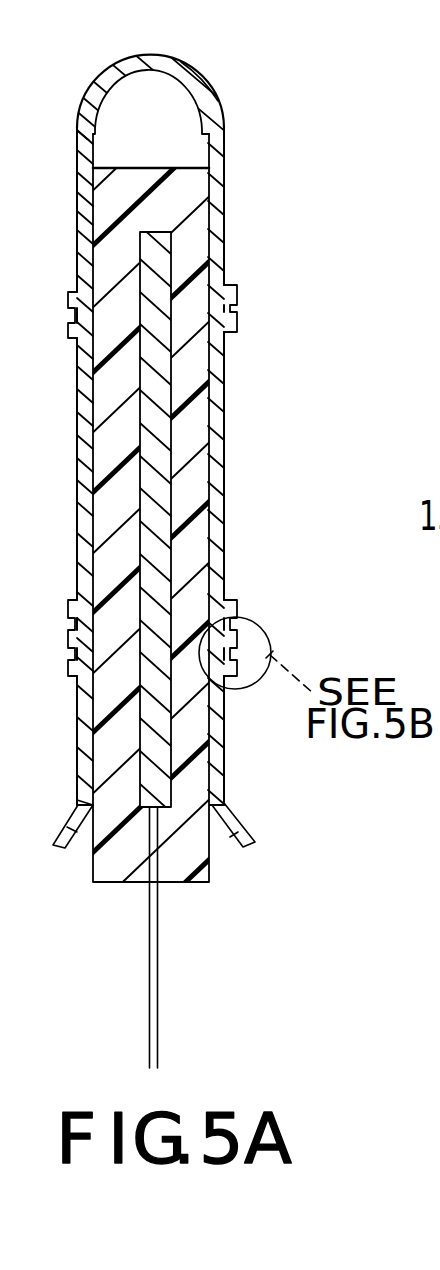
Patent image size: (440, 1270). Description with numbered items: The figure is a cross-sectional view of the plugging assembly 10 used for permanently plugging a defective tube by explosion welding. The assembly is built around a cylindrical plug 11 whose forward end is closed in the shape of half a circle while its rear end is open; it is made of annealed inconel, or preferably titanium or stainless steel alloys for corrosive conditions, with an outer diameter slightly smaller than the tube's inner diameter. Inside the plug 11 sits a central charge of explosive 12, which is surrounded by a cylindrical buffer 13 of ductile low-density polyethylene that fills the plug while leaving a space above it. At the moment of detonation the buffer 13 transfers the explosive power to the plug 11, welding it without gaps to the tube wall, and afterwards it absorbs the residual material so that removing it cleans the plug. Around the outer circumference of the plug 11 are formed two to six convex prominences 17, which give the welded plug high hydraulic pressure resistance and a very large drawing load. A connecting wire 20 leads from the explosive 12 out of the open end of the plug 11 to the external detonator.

The plugging assembly 10 is at (272, 276).
The plug 11 is at (223, 122).
The explosive 12 is at (153, 517).
The cylindrical buffer 13 is at (195, 528).
The convex prominences 17 is at (231, 331).
The connecting wire 20 is at (159, 970).